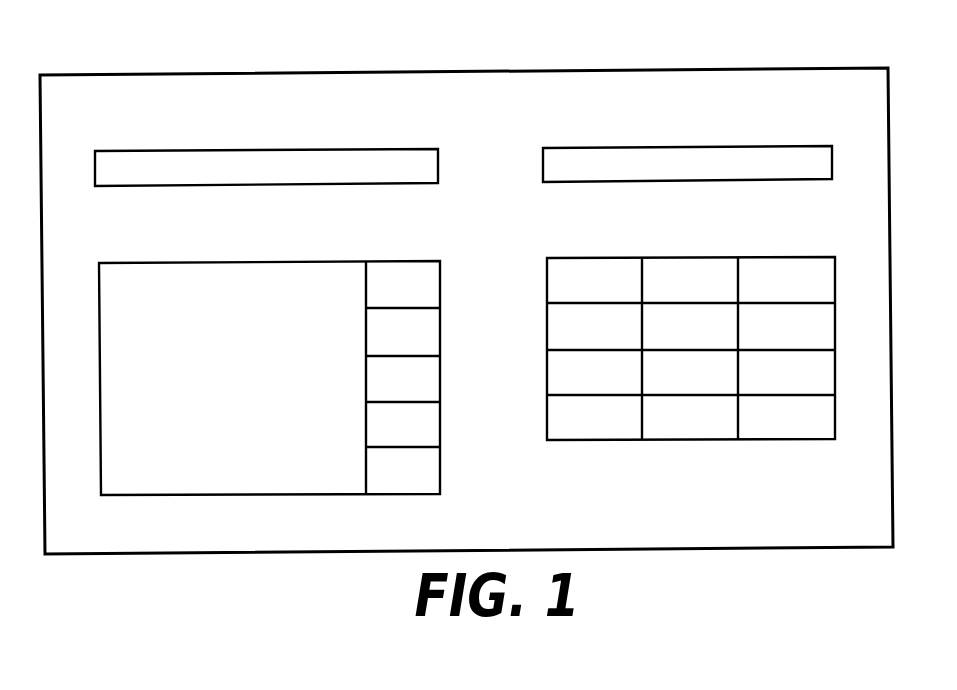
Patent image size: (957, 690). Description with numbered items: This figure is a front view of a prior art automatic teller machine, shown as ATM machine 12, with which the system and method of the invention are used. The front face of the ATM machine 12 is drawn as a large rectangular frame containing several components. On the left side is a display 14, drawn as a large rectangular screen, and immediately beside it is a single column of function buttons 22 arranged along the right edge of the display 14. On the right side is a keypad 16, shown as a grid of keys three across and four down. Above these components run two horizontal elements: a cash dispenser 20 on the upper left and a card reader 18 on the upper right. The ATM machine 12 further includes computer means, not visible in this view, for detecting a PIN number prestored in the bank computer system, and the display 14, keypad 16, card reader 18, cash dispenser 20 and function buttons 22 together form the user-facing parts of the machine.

The ATM machine 12 is at (523, 71).
The display 14 is at (269, 378).
The keypad 16 is at (793, 440).
The card reader 18 is at (785, 146).
The cash dispenser 20 is at (284, 151).
The function buttons 22 is at (434, 496).